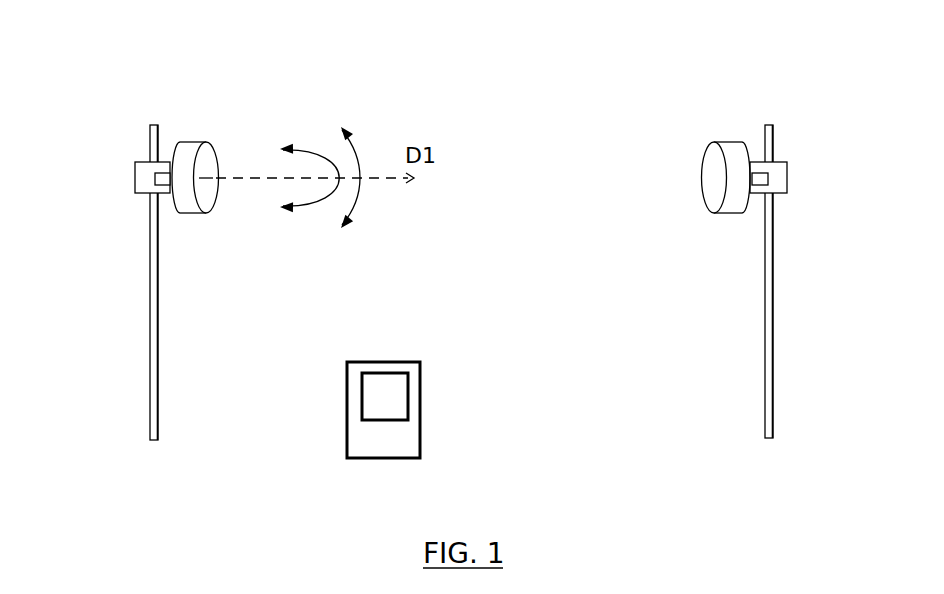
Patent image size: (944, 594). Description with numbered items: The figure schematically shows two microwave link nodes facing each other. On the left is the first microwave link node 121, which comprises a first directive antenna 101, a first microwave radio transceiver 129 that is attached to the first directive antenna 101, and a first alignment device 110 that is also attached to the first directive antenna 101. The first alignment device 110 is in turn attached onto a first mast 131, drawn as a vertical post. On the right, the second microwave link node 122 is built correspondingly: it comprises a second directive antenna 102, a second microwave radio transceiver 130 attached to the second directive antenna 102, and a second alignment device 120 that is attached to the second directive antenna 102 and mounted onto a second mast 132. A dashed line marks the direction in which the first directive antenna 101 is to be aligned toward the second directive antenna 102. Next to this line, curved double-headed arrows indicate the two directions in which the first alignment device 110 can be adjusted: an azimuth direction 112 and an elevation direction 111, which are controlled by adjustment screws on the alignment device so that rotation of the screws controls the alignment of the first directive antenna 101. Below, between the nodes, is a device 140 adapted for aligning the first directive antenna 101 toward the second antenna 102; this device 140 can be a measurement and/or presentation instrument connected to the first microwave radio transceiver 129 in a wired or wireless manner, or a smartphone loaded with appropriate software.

The first directive antenna 101 is at (190, 152).
The second directive antenna 102 is at (732, 160).
The first alignment device 110 is at (135, 175).
The elevation direction 111 is at (358, 202).
The azimuth direction 112 is at (310, 205).
The second alignment device 120 is at (780, 182).
The first microwave link node 121 is at (92, 74).
The second microwave link node 122 is at (827, 78).
The first microwave radio transceiver 129 is at (165, 182).
The second microwave radio transceiver 130 is at (760, 182).
The first mast 131 is at (153, 318).
The second mast 132 is at (690, 281).
The device 140 is at (387, 438).